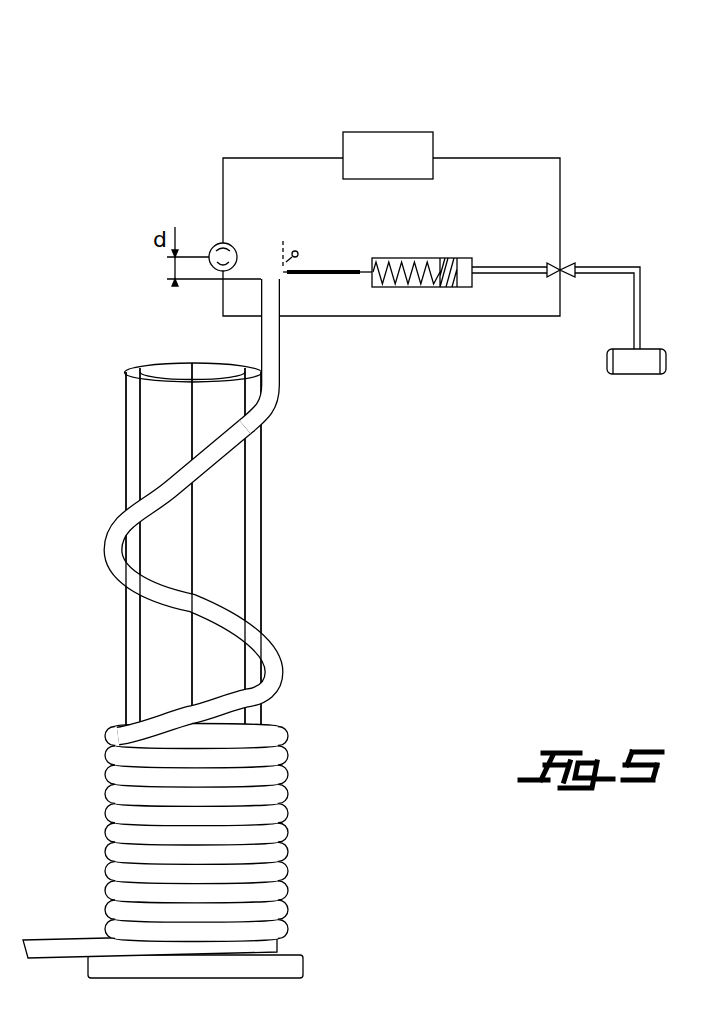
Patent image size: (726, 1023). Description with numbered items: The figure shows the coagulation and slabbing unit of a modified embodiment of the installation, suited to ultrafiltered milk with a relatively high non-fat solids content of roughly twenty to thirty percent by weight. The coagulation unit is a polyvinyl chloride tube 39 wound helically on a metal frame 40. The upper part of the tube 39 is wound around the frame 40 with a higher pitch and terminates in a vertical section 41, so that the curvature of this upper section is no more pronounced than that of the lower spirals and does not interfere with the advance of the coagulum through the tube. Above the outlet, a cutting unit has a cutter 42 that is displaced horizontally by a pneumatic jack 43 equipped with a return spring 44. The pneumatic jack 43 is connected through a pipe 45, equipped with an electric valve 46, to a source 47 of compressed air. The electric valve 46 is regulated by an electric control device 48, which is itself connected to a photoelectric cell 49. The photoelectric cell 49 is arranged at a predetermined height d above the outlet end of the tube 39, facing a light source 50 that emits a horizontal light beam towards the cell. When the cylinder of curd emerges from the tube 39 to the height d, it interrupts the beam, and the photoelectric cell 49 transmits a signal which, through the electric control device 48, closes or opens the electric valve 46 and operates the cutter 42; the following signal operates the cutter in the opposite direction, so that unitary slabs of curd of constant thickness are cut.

The polyvinyl chloride tube 39 is at (100, 558).
The metal frame 40 is at (123, 392).
The vertical section 41 is at (282, 333).
The cutter 42 is at (317, 268).
The pneumatic jack 43 is at (420, 257).
The return spring 44 is at (389, 258).
The pipe 45 is at (498, 266).
The electric valve 46 is at (570, 262).
The source of compressed air 47 is at (631, 374).
The electric control device 48 is at (389, 131).
The photoelectric cell 49 is at (215, 247).
The light source 50 is at (296, 250).